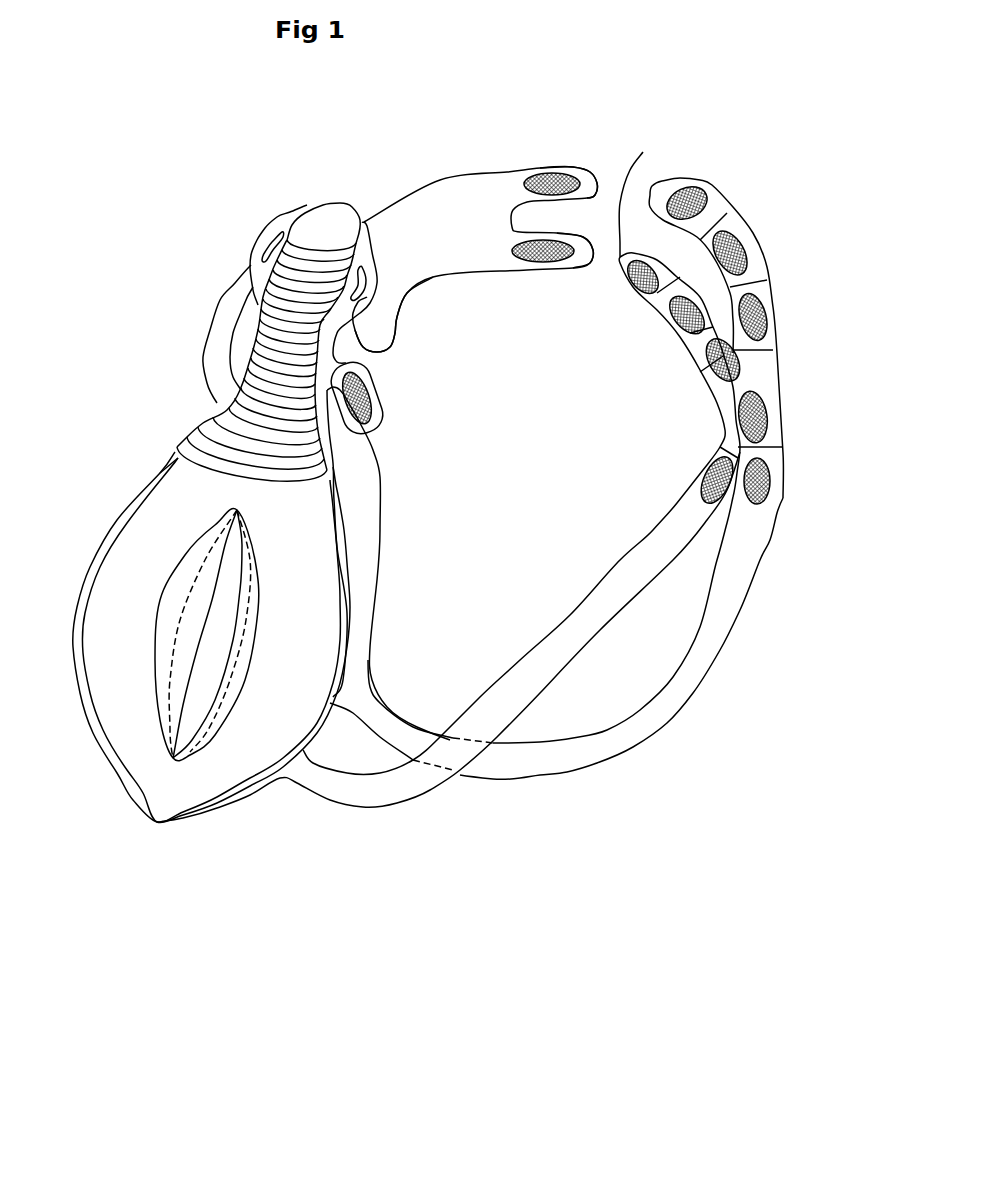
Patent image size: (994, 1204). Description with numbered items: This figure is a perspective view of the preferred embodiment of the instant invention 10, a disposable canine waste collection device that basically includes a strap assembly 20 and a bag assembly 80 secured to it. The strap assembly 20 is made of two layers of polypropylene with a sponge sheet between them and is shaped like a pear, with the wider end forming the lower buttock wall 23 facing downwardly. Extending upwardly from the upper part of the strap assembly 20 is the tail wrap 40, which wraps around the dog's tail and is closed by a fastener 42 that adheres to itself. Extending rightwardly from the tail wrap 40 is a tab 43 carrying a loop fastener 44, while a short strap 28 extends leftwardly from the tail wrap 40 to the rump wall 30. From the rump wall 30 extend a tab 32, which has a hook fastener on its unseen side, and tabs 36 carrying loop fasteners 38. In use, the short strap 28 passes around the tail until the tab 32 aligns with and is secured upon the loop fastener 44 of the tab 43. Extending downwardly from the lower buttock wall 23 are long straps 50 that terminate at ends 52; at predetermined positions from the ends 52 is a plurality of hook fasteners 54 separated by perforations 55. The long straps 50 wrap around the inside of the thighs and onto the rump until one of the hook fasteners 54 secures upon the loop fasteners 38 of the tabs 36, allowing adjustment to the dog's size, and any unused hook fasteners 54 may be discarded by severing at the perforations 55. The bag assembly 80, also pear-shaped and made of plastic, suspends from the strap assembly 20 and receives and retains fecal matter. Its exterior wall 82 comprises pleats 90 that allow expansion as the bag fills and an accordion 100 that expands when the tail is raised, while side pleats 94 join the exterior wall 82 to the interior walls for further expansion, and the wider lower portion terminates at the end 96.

The instant invention 10 is at (424, 886).
The strap assembly 20 is at (653, 121).
The lower buttock wall 23 is at (363, 510).
The short strap 28 is at (235, 320).
The rump wall 30 is at (452, 240).
The tab 32 is at (400, 333).
The tabs 36 is at (593, 165).
The loop fasteners 38 is at (548, 173).
The tail wrap 40 is at (333, 207).
The fastener 42 is at (267, 247).
The tab 43 is at (376, 432).
The loop fastener 44 is at (368, 396).
The long straps 50 is at (613, 587).
The ends 52 is at (643, 152).
The hook fasteners 54 is at (690, 190).
The perforations 55 is at (657, 327).
The bag assembly 80 is at (106, 798).
The exterior wall 82 is at (152, 578).
The pleats 90 is at (200, 703).
The side pleats 94 is at (95, 567).
The end 96 is at (157, 824).
The accordion 100 is at (205, 417).